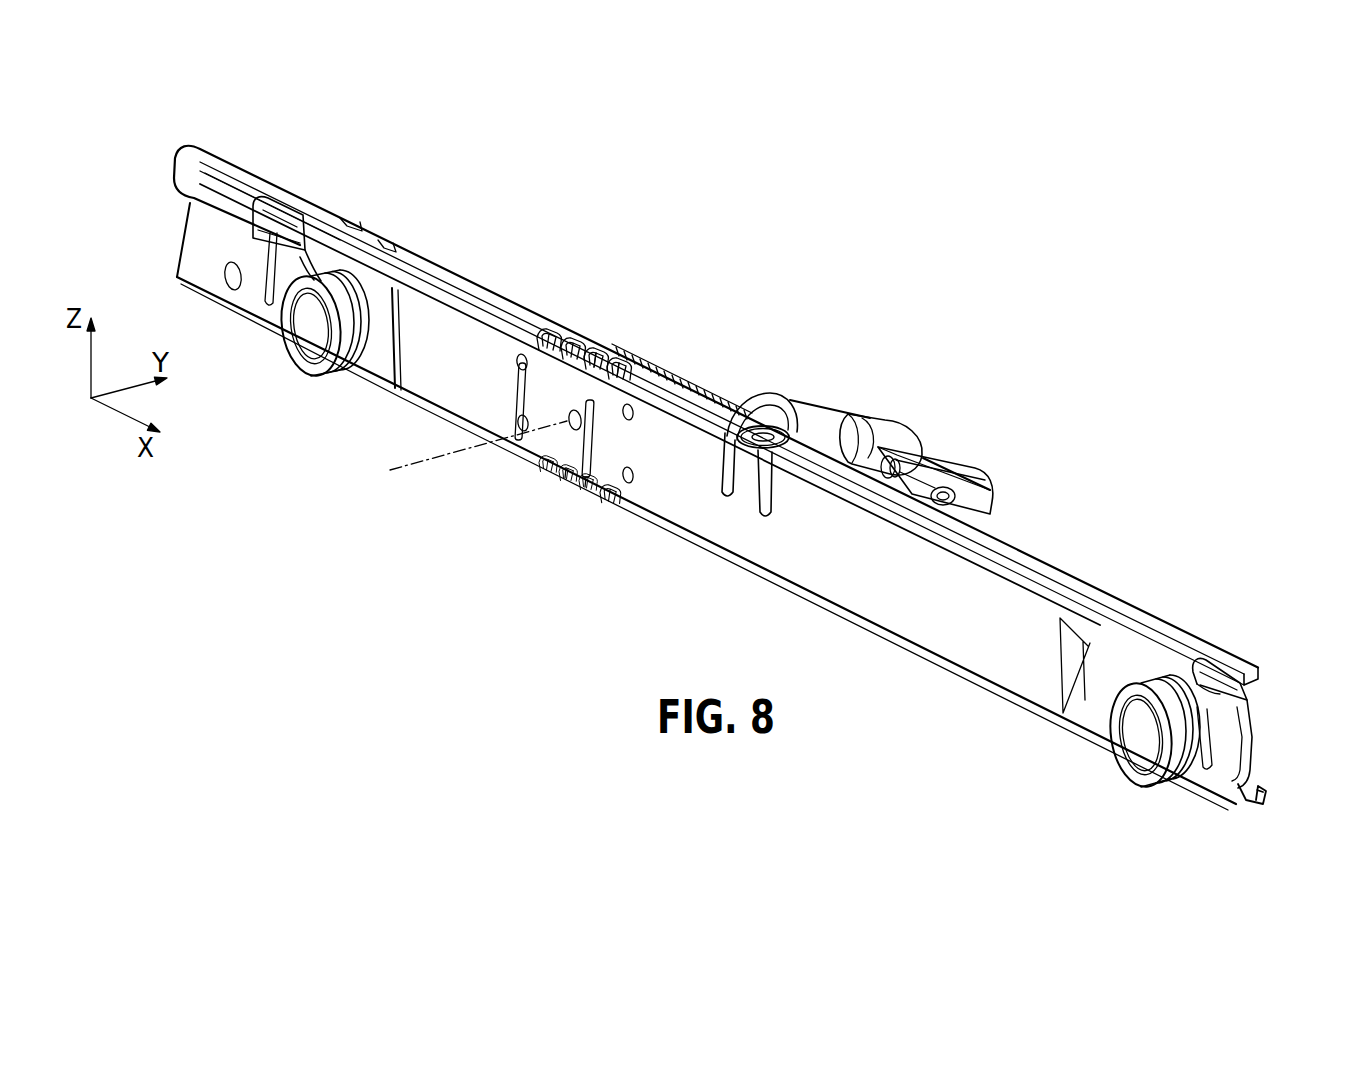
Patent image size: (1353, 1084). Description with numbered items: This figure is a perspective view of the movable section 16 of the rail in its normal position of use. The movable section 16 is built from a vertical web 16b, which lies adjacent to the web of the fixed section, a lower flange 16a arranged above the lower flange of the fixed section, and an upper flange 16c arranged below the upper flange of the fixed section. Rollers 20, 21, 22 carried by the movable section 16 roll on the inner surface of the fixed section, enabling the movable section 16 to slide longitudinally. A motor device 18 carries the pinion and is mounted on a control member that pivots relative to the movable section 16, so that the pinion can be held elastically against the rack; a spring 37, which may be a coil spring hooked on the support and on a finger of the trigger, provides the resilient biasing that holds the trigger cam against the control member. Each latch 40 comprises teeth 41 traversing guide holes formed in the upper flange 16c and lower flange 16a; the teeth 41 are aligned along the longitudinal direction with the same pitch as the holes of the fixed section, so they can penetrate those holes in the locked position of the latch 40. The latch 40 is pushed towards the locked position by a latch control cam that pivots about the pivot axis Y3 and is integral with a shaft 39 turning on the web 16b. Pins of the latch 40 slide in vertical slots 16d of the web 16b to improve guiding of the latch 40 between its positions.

The movable section 16 is at (736, 520).
The lower flange 16a is at (1253, 805).
The vertical web 16b is at (1007, 648).
The upper flange 16c is at (1131, 603).
The vertical slots 16d is at (538, 432).
The motor device 18 is at (922, 409).
The roller 20 is at (262, 213).
The roller 21 is at (760, 450).
The roller 22 is at (305, 365).
The spring 37 is at (688, 377).
The shaft 39 is at (573, 428).
The latch 40 is at (586, 322).
The teeth 41 is at (617, 352).
The pivot axis Y3 is at (396, 470).